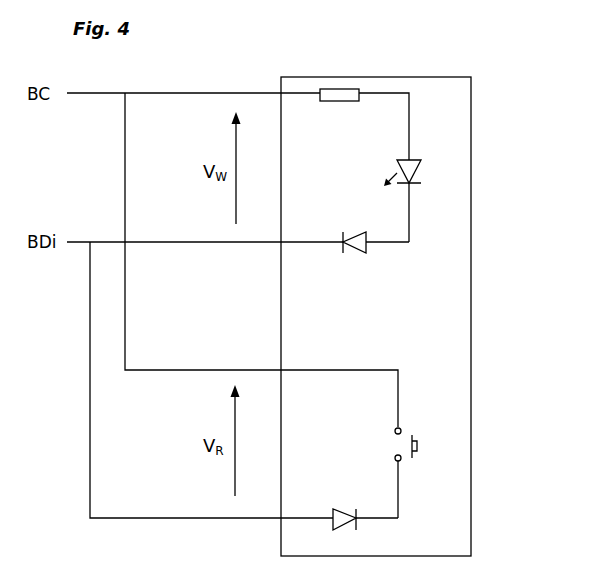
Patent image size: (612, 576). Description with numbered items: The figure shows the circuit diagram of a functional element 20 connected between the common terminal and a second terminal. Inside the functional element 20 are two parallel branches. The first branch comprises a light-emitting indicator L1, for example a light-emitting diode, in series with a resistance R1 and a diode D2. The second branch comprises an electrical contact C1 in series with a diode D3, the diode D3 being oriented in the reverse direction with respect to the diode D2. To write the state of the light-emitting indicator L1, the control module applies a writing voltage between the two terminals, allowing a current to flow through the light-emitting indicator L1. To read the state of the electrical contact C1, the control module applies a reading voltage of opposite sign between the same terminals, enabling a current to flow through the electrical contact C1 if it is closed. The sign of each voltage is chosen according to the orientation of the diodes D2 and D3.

The functional element 20 is at (471, 137).
The resistance R1 is at (339, 105).
The light-emitting indicator L1 is at (415, 201).
The diode D2 is at (376, 233).
The diode D3 is at (365, 509).
The electrical contact C1 is at (419, 444).